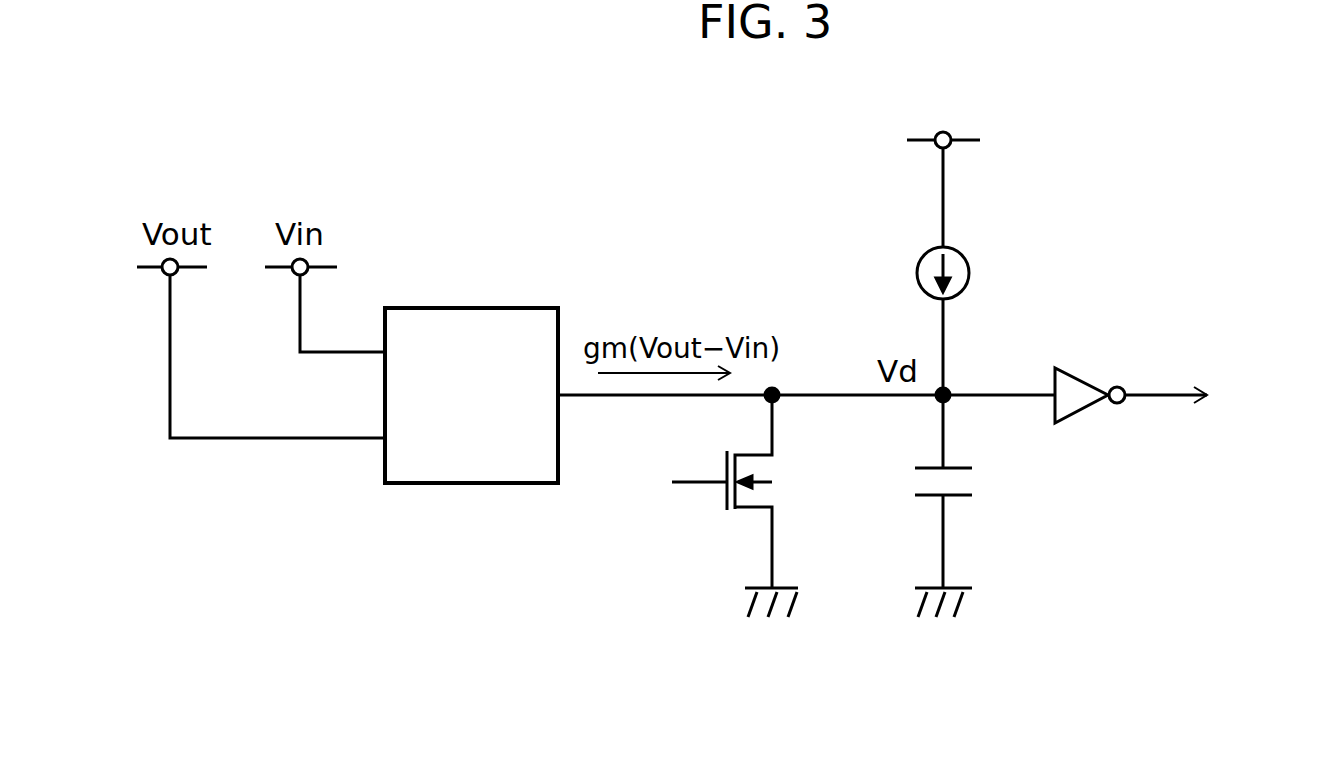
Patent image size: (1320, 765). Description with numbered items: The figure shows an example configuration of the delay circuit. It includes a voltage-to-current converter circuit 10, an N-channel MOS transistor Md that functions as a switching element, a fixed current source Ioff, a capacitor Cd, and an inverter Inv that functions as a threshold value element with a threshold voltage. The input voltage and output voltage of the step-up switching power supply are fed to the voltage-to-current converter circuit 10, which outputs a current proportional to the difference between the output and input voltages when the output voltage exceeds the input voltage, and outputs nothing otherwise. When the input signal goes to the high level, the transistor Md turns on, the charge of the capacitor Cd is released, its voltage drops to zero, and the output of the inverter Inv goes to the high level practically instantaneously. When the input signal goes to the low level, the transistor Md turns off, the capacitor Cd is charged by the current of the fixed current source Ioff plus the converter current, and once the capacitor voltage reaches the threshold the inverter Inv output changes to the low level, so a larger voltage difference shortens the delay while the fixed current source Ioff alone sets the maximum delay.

The voltage-to-current converter circuit 10 is at (470, 308).
The N-channel MOS transistor Md is at (734, 506).
The capacitor Cd is at (972, 506).
The inverter Inv is at (1156, 399).
The fixed current source Ioff is at (971, 263).